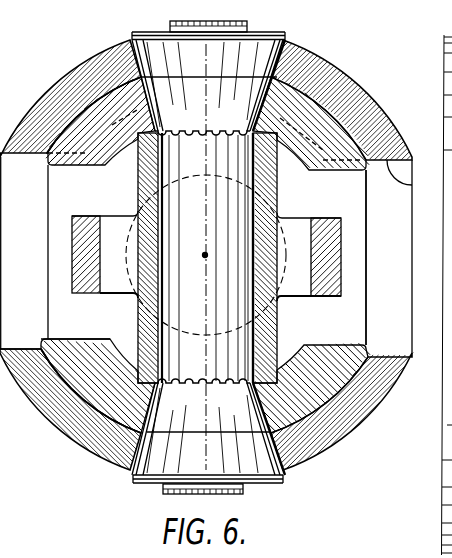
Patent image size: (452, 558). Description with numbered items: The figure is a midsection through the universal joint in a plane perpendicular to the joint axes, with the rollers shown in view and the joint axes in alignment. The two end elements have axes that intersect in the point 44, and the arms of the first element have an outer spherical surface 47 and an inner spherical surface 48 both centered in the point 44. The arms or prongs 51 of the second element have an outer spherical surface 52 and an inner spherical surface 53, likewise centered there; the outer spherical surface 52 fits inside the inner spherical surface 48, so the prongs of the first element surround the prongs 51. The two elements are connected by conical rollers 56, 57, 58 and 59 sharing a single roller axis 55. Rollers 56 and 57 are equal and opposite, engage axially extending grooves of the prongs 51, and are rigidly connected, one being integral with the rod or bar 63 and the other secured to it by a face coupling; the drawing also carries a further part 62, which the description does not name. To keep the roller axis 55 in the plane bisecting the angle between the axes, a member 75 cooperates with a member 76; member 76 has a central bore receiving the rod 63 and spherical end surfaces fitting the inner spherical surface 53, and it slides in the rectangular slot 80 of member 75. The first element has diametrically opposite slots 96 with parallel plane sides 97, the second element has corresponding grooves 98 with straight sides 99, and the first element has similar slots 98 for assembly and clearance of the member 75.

The point 44 is at (203, 255).
The outer spherical surface 47 is at (35, 102).
The inner spherical surface 48 is at (80, 113).
The arms or prongs 51 is at (118, 395).
The outer spherical surface 52 is at (333, 400).
The inner spherical surface 53 is at (118, 352).
The roller axis 55 is at (203, 304).
The roller 56 is at (162, 101).
The roller 57 is at (175, 398).
The roller 58 is at (262, 48).
The roller 59 is at (180, 459).
The upper right liner 62 is at (301, 103).
The rod or bar 63 is at (237, 170).
The member 75 is at (322, 231).
The cooperating member 76 is at (145, 321).
The rectangular slot 80 is at (293, 284).
The slots 96 is at (389, 266).
The plane sides 97 is at (409, 177).
The grooves 98 is at (72, 203).
The straight sides 99 is at (73, 339).